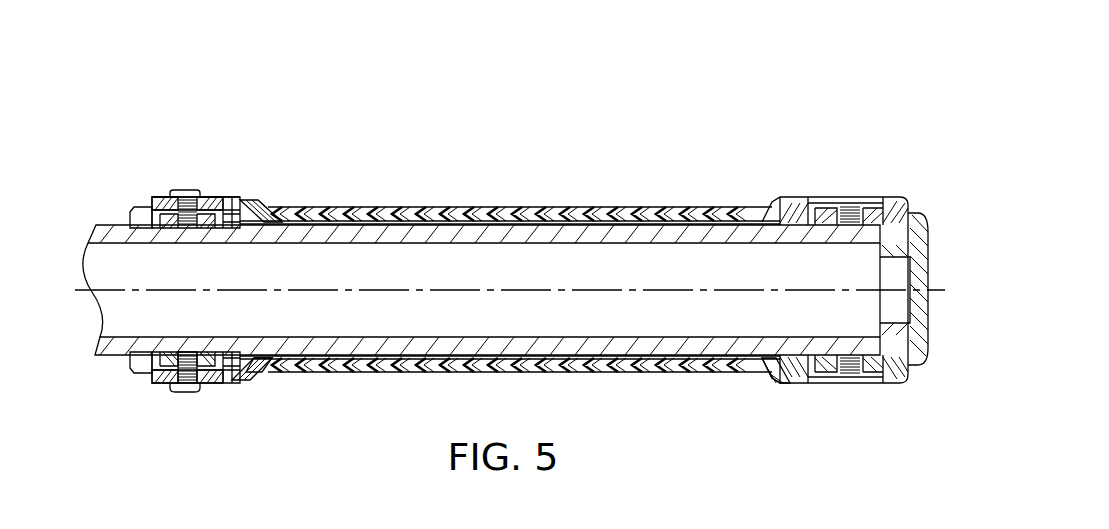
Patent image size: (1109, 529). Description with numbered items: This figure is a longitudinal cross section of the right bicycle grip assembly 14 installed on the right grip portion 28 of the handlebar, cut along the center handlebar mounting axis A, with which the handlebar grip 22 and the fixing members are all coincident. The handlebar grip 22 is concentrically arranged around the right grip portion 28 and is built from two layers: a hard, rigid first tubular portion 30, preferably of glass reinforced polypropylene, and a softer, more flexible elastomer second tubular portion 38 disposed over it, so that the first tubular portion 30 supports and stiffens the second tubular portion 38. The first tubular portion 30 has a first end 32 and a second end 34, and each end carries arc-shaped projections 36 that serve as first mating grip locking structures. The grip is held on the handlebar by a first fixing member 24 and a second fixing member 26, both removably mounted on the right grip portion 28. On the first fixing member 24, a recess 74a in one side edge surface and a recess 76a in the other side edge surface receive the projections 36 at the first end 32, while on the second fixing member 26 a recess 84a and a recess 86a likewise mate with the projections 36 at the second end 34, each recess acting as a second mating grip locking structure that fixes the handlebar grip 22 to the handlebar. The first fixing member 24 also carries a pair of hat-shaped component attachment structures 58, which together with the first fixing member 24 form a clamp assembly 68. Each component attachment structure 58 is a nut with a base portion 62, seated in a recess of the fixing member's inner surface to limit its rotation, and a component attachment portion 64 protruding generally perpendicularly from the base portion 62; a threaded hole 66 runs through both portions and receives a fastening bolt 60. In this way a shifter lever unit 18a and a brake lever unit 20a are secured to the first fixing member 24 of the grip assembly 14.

The right bicycle grip assembly 14 is at (749, 69).
The shifter lever unit 18a is at (161, 196).
The brake lever unit 20a is at (161, 390).
The handlebar grip 22 is at (520, 232).
The first fixing member 24 is at (208, 133).
The second fixing member 26 is at (801, 198).
The right grip portion 28 is at (668, 224).
The first tubular portion 30 is at (486, 207).
The first end 32 is at (260, 380).
The second end 34 is at (775, 384).
The projection 36 is at (248, 208).
The second tubular portion 38 is at (470, 135).
The component attachment structure 58 is at (218, 197).
The fastening bolt 60 is at (188, 190).
The base portion 62 is at (210, 352).
The component attachment portion 64 is at (163, 352).
The threaded hole 66 is at (188, 358).
The clamp assembly 68 is at (217, 158).
The recess 74a is at (248, 223).
The recess 76a is at (133, 222).
The recess 84a is at (250, 356).
The recess 86a is at (133, 358).
The center handlebar mounting axis A is at (613, 292).